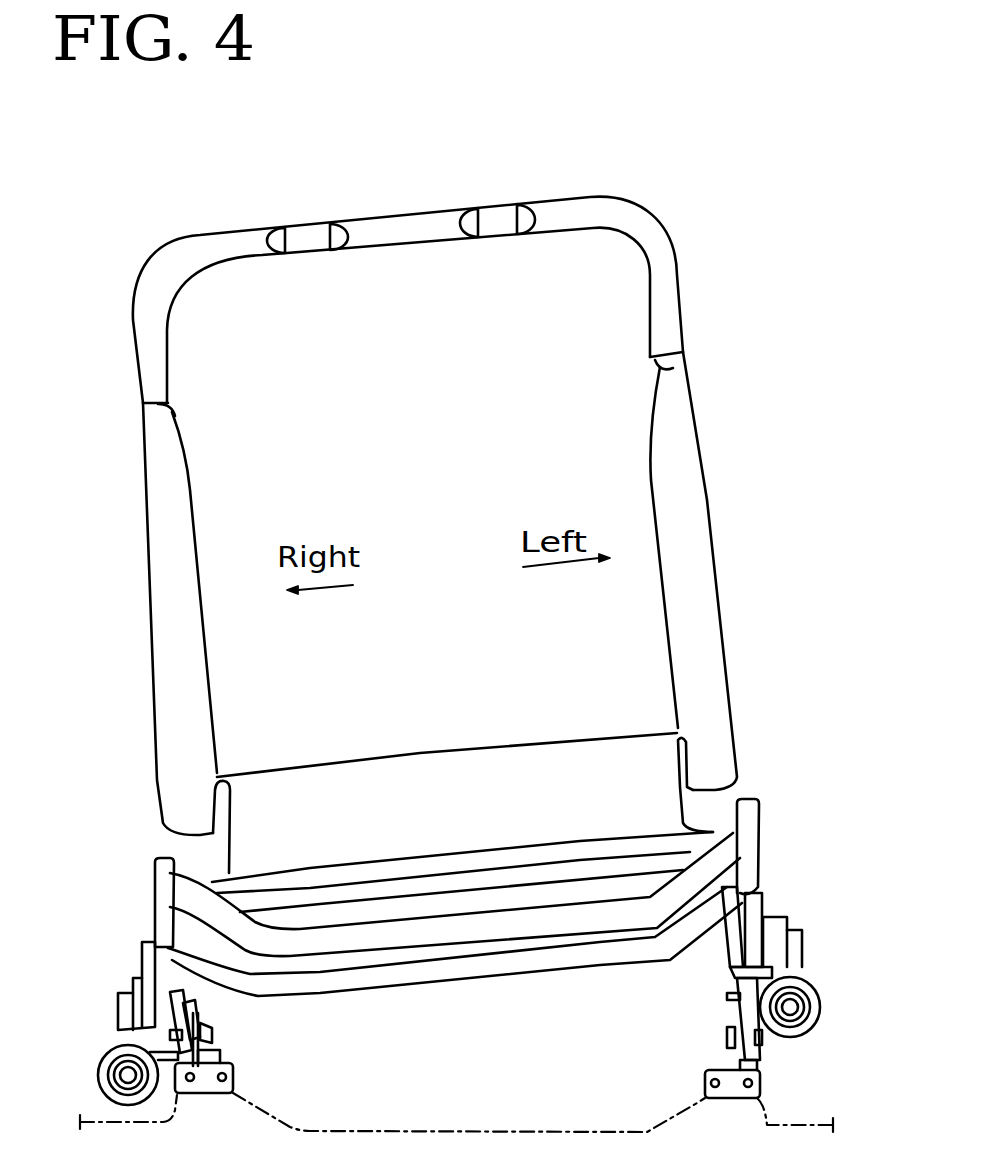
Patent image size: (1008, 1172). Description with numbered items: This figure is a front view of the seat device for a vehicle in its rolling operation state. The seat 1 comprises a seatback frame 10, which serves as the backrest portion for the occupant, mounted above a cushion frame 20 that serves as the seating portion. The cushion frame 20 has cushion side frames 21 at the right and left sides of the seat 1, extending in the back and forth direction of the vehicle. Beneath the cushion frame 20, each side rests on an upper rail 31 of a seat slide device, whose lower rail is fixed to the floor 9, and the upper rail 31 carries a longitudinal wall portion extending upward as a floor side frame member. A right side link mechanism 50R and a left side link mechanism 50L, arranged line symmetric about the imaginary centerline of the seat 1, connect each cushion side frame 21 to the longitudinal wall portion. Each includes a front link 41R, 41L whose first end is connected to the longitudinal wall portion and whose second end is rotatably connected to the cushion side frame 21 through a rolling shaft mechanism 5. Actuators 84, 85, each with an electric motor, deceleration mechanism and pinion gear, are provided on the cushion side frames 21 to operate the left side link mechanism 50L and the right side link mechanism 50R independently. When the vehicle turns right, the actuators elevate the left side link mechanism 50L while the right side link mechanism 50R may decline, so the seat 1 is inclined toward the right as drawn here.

The seat 1 is at (718, 440).
The seatback frame 10 is at (693, 507).
The cushion frame 20 is at (785, 868).
The cushion side frame 21 is at (162, 907).
The actuator 84 is at (810, 953).
The actuator 85 is at (128, 972).
The front link 41R is at (152, 1012).
The front link 41L is at (743, 1008).
The right side link mechanism 50R is at (228, 1030).
The left side link mechanism 50L is at (730, 993).
The rolling shaft mechanism 5 is at (218, 1042).
The upper rail 31 is at (235, 1060).
The floor 9 is at (416, 1130).